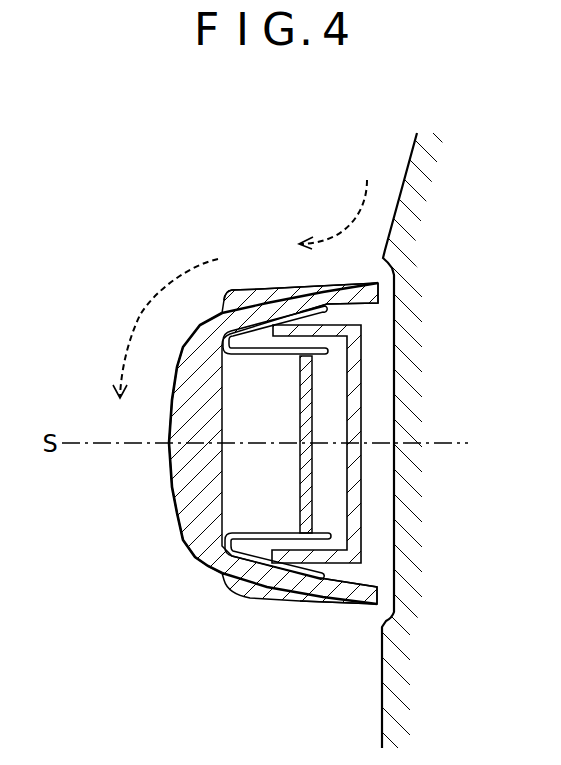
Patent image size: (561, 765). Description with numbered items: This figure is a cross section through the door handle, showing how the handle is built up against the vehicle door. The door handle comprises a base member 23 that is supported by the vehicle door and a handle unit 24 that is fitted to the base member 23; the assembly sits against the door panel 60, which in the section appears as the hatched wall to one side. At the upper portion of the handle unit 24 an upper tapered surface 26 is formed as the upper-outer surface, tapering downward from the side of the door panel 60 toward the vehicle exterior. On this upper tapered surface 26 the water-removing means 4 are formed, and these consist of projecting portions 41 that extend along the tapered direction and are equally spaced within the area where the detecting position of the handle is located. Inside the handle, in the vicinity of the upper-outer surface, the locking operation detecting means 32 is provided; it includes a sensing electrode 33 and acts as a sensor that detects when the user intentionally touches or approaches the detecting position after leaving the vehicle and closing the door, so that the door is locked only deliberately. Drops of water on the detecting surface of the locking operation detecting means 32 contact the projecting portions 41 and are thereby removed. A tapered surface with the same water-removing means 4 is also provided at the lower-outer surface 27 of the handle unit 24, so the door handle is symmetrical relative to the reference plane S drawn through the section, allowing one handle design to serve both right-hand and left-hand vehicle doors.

The door panel 60 is at (410, 159).
The projecting portions 41 is at (258, 287).
The water-removing means 4 is at (282, 244).
The upper tapered surface 26 is at (355, 282).
The lower-outer surface 27 is at (350, 606).
The base member 23 is at (362, 375).
The handle unit 24 is at (178, 499).
The sensing electrode 33 is at (270, 355).
The locking operation detecting means 32 is at (270, 444).